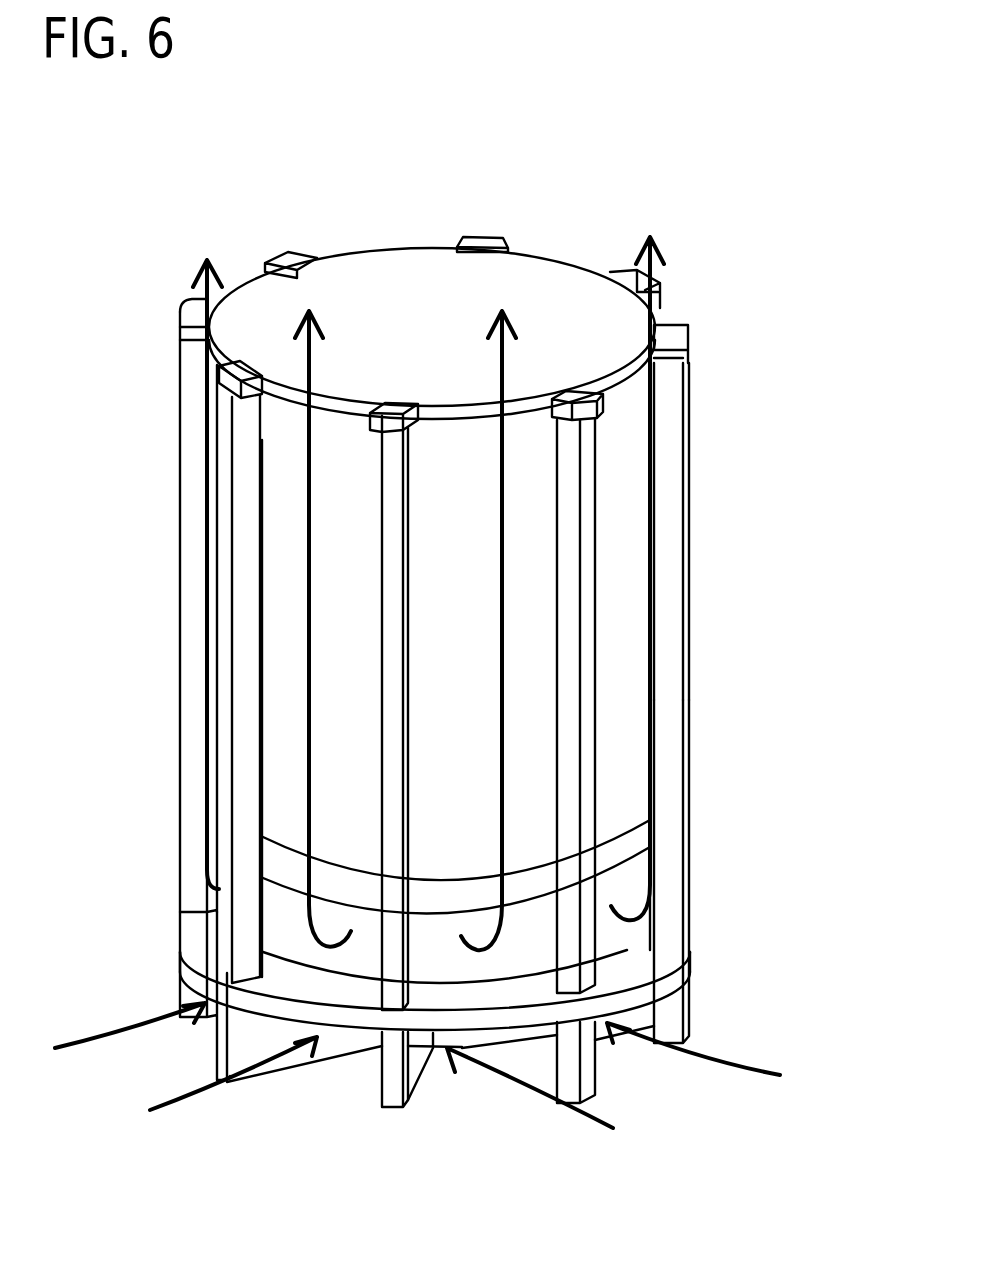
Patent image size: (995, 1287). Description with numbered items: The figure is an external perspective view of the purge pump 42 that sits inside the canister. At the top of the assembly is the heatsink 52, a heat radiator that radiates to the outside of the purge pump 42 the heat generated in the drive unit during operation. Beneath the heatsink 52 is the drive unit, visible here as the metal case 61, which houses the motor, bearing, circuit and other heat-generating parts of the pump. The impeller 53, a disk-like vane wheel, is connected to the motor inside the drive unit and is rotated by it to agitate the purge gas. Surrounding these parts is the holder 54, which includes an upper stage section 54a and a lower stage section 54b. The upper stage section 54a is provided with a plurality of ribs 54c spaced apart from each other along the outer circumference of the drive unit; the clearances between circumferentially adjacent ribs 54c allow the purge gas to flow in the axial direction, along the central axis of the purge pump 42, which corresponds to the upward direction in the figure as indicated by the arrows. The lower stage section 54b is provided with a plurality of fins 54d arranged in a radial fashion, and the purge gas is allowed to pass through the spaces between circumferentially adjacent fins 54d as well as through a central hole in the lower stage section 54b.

The purge pump 42 is at (630, 195).
The heatsink 52 is at (627, 375).
The impeller 53 is at (613, 937).
The holder 54 is at (692, 688).
The upper stage section 54a is at (160, 905).
The lower stage section 54b is at (160, 912).
The ribs 54c is at (663, 450).
The fins 54d is at (527, 1054).
The metal case 61 is at (625, 580).